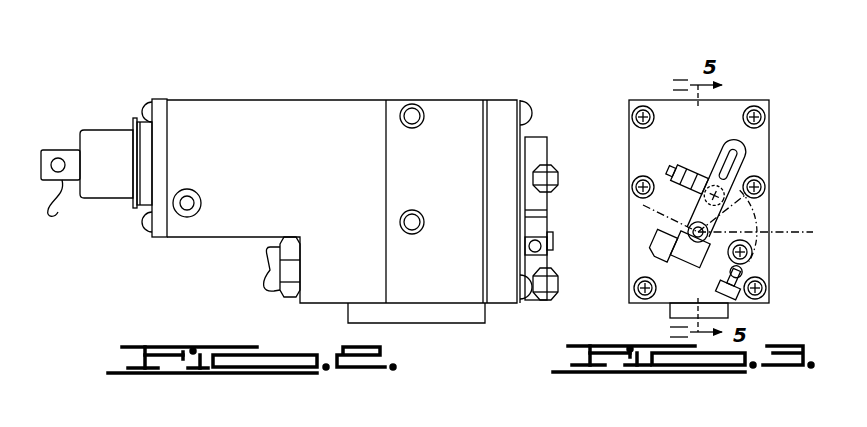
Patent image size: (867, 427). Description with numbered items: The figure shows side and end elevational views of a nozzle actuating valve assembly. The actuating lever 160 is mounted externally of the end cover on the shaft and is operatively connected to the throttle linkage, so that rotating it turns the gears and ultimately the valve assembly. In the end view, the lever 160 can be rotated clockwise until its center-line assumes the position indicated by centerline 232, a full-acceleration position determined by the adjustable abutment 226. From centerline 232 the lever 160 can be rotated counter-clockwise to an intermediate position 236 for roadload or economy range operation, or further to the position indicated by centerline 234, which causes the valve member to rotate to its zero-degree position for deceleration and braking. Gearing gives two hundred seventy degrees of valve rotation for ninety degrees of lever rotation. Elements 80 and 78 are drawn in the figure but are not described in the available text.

In FIG. 2, the solenoid housing 80 is at (303, 99).
In FIG. 2, the terminal tab 78 is at (66, 191).
In FIG. 2, the actuating lever 160 is at (540, 142).
In FIG. 3, the actuating lever 160 is at (720, 143).
In FIG. 3, the centerline 234 is at (743, 130).
In FIG. 3, the intermediate position 236 is at (803, 172).
In FIG. 3, the centerline 232 is at (755, 258).
In FIG. 3, the adjustable abutment 226 is at (720, 268).